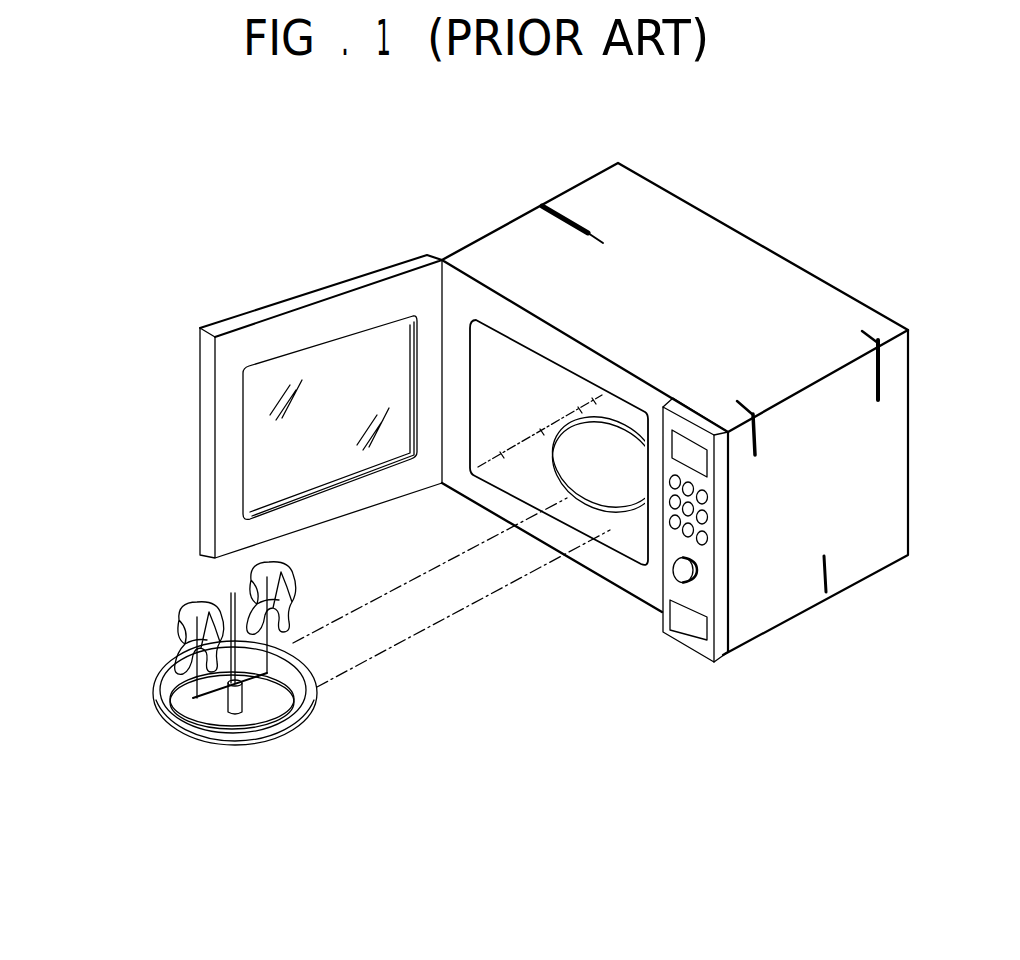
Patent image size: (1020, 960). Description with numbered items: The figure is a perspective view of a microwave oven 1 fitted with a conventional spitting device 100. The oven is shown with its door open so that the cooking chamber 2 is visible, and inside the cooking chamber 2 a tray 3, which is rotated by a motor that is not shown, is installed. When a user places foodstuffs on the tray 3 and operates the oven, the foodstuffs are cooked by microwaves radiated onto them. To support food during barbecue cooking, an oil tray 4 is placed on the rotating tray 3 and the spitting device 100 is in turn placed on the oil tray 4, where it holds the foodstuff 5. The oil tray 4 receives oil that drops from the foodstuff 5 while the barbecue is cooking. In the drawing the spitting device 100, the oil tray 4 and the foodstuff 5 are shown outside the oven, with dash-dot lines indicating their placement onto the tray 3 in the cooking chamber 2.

The microwave oven 1 is at (463, 182).
The cooking chamber 2 is at (497, 350).
The tray 3 is at (635, 495).
The oil tray 4 is at (276, 746).
The foodstuff 5 is at (173, 613).
The spitting device 100 is at (180, 687).